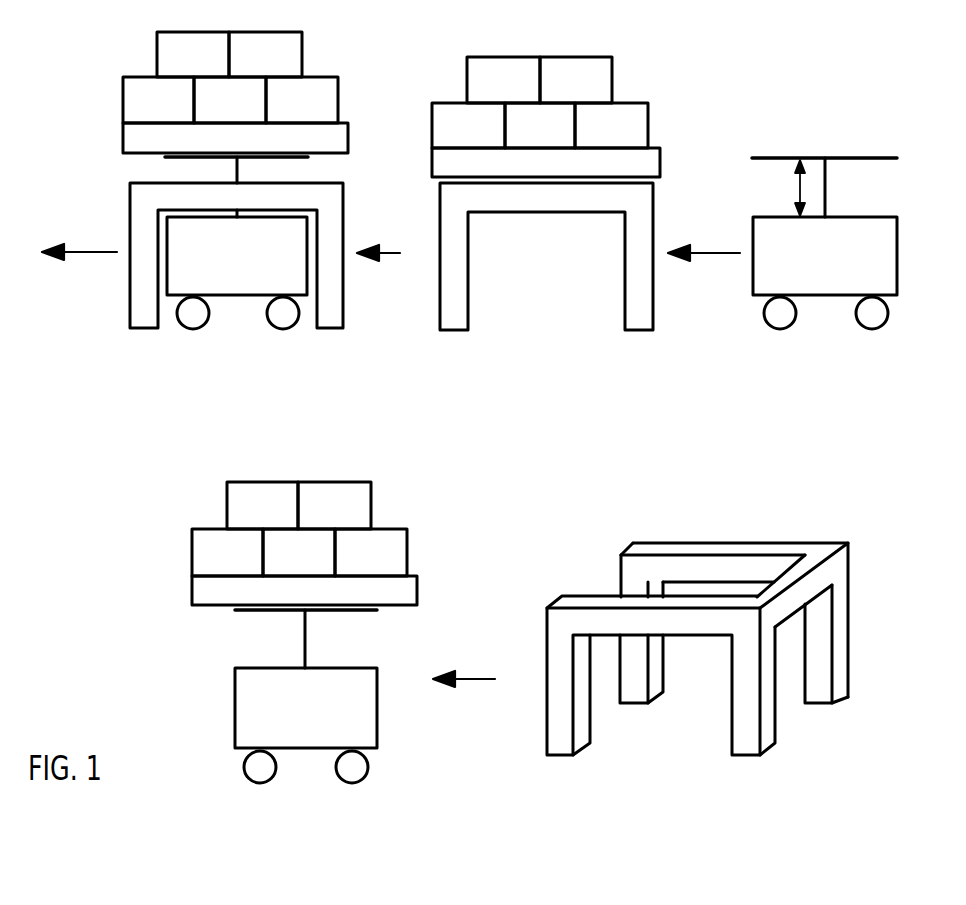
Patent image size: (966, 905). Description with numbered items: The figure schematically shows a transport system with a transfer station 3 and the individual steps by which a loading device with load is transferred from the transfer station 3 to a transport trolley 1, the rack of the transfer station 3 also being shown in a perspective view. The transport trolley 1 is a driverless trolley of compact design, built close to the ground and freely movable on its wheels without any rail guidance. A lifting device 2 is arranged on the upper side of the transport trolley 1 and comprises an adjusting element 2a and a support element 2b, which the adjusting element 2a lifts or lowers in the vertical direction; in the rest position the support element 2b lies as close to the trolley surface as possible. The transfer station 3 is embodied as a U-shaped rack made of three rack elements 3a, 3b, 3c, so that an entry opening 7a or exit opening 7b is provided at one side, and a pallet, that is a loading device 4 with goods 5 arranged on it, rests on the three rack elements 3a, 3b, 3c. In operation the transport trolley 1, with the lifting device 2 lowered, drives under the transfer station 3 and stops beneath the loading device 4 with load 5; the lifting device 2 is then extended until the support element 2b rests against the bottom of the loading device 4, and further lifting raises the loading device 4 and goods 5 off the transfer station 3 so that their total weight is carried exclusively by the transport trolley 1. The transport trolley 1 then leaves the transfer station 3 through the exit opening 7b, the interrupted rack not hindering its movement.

The transport trolley 1 is at (238, 297).
The lifting device 2 is at (940, 152).
The adjusting element 2a is at (827, 187).
The support element 2b is at (768, 155).
The transfer station 3 is at (527, 494).
The rack element 3a is at (737, 543).
The rack element 3b is at (832, 557).
The rack element 3c is at (588, 593).
The loading device 4 is at (352, 136).
The goods 5 is at (322, 73).
The entry opening 7a is at (792, 682).
The exit opening 7b is at (602, 697).